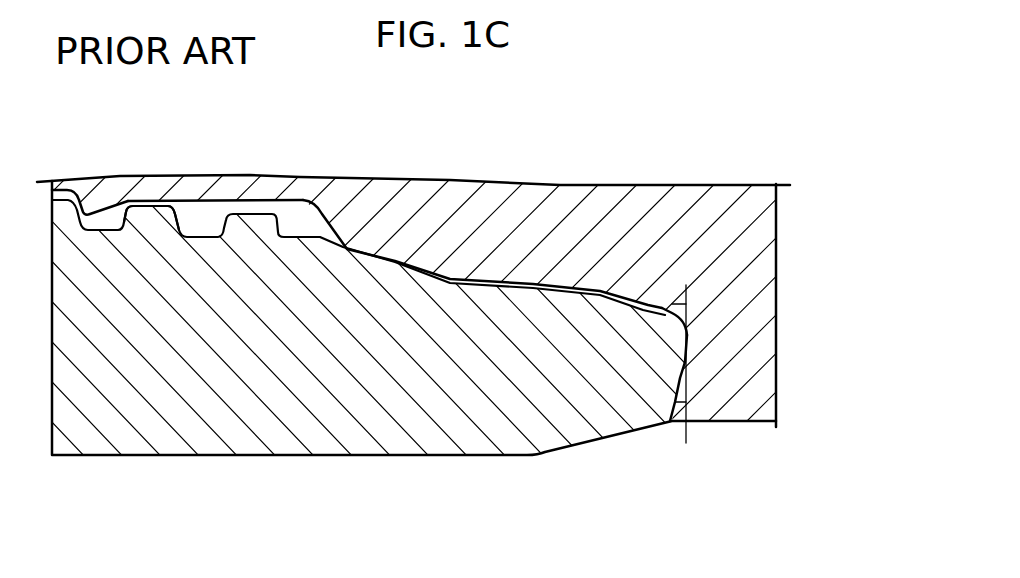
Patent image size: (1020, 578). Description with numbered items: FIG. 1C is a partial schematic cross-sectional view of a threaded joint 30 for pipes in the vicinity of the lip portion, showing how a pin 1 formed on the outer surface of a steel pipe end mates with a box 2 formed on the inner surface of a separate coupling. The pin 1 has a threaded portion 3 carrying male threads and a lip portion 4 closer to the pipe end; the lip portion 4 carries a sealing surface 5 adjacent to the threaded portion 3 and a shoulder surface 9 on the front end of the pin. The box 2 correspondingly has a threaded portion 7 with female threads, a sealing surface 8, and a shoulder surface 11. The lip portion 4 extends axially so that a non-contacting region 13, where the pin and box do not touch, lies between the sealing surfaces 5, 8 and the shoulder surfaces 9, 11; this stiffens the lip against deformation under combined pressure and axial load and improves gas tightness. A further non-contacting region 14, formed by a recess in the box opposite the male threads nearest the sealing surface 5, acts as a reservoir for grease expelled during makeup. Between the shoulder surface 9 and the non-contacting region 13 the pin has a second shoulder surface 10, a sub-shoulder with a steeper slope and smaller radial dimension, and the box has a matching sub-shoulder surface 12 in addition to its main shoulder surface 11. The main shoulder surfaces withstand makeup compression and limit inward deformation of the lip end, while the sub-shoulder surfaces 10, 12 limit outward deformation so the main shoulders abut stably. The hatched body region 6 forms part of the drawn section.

The pin 1 is at (172, 443).
The box 2 is at (597, 243).
The threaded portion 3 is at (153, 225).
The lip portion 4 is at (428, 385).
The sealing surface 5 is at (397, 258).
The body region 6 is at (558, 380).
The threaded portion 7 is at (97, 208).
The sealing surface 8 is at (395, 260).
The shoulder surface 9 is at (672, 381).
The second shoulder surface 10 is at (667, 308).
The shoulder surface 11 is at (672, 381).
The sub-shoulder surface 12 is at (658, 305).
The non-contacting region 13 is at (528, 287).
The non-contacting region 14 is at (203, 225).
The threaded joint 30 is at (430, 162).